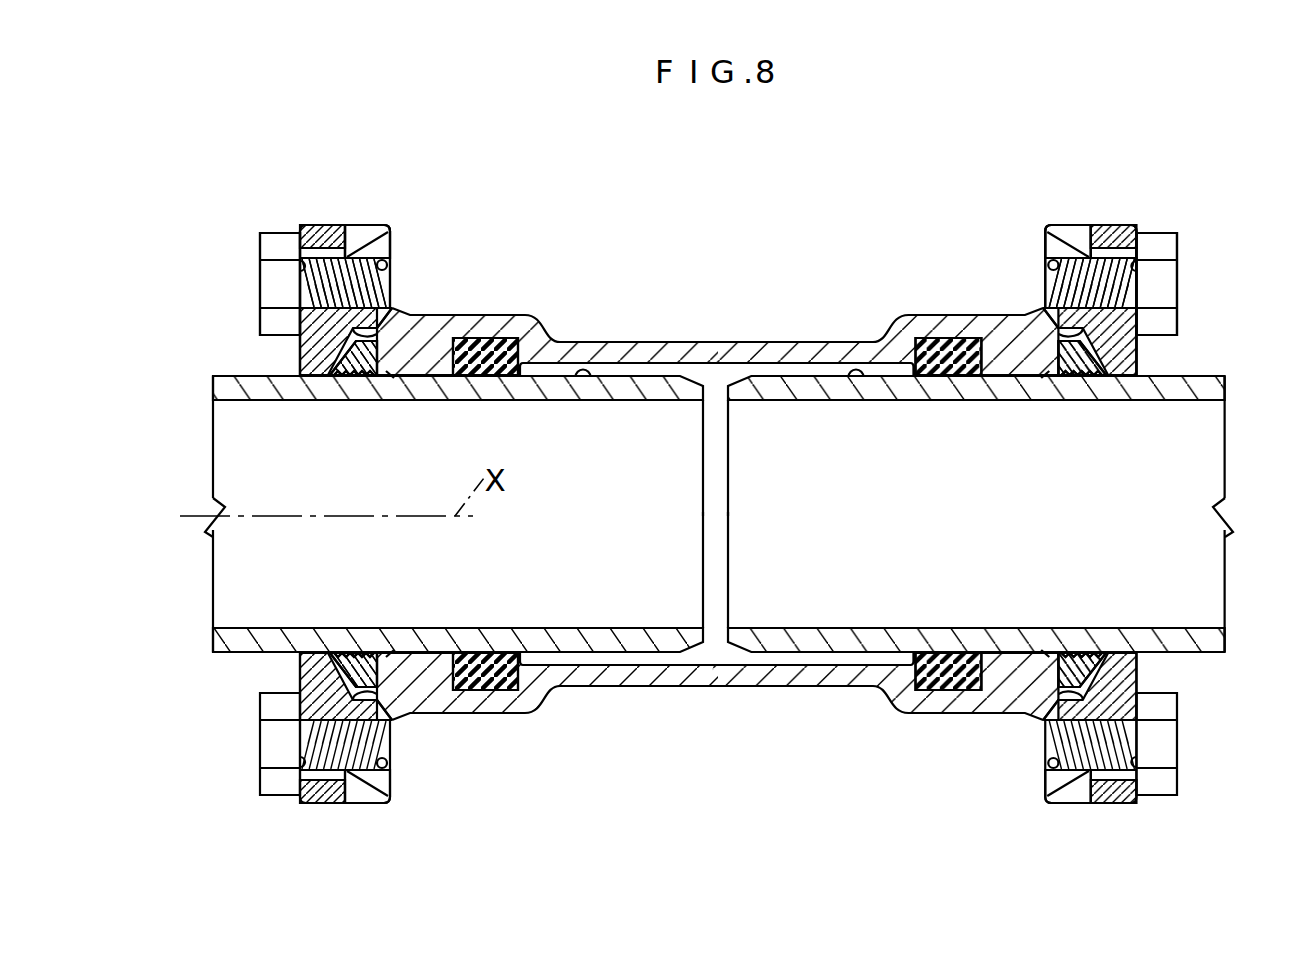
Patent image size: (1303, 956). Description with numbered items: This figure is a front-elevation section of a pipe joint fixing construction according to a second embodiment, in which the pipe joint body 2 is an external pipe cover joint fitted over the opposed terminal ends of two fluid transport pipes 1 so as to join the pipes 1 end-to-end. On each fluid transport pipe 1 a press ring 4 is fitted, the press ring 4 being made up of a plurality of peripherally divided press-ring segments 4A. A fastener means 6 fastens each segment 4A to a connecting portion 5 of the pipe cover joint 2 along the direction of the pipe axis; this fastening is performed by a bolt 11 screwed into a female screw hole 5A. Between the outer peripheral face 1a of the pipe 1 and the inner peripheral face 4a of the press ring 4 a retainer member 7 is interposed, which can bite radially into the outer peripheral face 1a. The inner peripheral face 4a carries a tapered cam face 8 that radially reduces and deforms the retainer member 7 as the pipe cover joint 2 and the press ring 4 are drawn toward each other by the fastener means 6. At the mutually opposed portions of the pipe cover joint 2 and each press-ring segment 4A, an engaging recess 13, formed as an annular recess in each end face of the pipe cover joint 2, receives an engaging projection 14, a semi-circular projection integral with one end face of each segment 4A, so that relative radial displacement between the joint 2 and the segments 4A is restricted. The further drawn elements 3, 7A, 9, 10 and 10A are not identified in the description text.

The fluid transport pipe 1 is at (622, 376).
The outer peripheral face 1a is at (583, 381).
The pipe joint body 2 is at (703, 342).
The seal ring 3 is at (490, 345).
The press ring 4 is at (313, 221).
The press-ring segment 4A is at (300, 340).
The inner peripheral face 4a is at (320, 376).
The connecting portion 5 is at (378, 224).
The female screw hole 5A is at (388, 262).
The fastener means 6 is at (238, 246).
The retainer member 7 is at (707, 514).
The biting portion of retainer ring 7A is at (346, 378).
The tapered cam face 8 is at (370, 378).
The serrated teeth 9 is at (1073, 378).
The washer 10 is at (338, 224).
The engaging projection of washer 10A is at (300, 265).
The bolt 11 is at (260, 318).
The engaging recess 13 is at (393, 378).
The engaging projection 14 is at (377, 330).